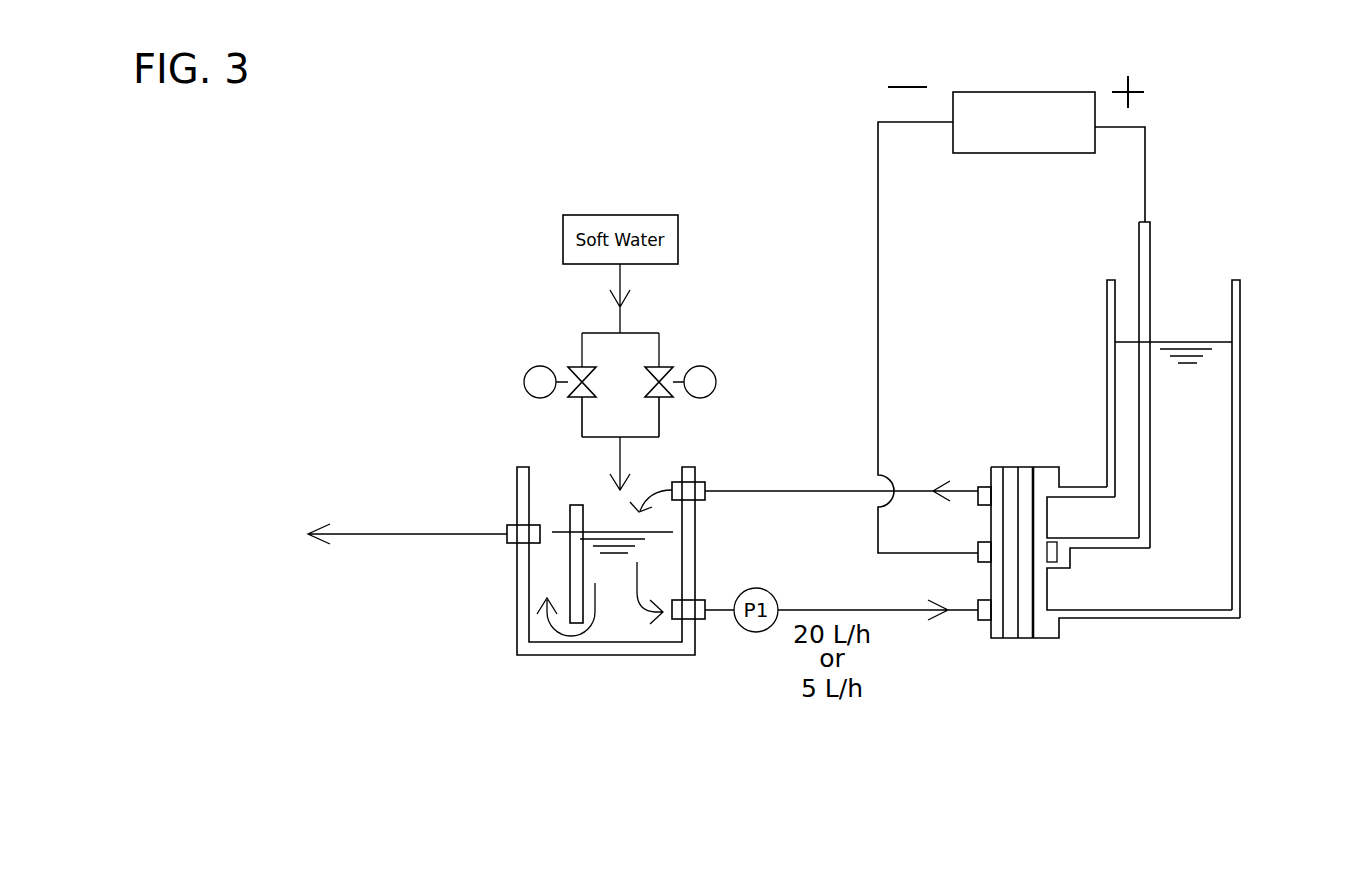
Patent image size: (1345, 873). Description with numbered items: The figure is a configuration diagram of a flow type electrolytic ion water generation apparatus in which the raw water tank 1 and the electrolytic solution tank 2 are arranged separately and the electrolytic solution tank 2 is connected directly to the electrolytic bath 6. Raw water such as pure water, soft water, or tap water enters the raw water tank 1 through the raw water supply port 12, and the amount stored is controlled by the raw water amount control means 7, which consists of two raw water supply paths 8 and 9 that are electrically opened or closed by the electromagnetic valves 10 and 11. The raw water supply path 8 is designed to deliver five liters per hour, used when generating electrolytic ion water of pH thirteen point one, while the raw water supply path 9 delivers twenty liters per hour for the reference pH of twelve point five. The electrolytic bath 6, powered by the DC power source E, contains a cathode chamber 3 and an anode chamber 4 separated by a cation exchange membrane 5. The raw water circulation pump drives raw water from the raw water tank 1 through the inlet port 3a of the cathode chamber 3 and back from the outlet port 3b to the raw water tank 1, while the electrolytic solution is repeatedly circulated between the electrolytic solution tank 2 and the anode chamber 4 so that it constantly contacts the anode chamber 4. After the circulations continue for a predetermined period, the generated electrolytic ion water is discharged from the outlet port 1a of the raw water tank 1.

The raw water tank 1 is at (638, 630).
The outlet port 1a is at (507, 543).
The electrolytic solution tank 2 is at (1158, 427).
The cathode chamber 3 is at (995, 467).
The inlet port 3a is at (980, 622).
The outlet port 3b is at (980, 483).
The anode chamber 4 is at (1043, 467).
The cation exchange membrane 5 is at (1018, 467).
The electrolytic bath 6 is at (1073, 362).
The raw water amount control means 7 is at (813, 276).
The raw water supply path 8 is at (580, 353).
The raw water supply path 9 is at (660, 353).
The electromagnetic valve 10 is at (577, 397).
The electromagnetic valve 11 is at (667, 397).
The raw water supply port 12 is at (625, 332).
The DC power source E is at (1050, 92).